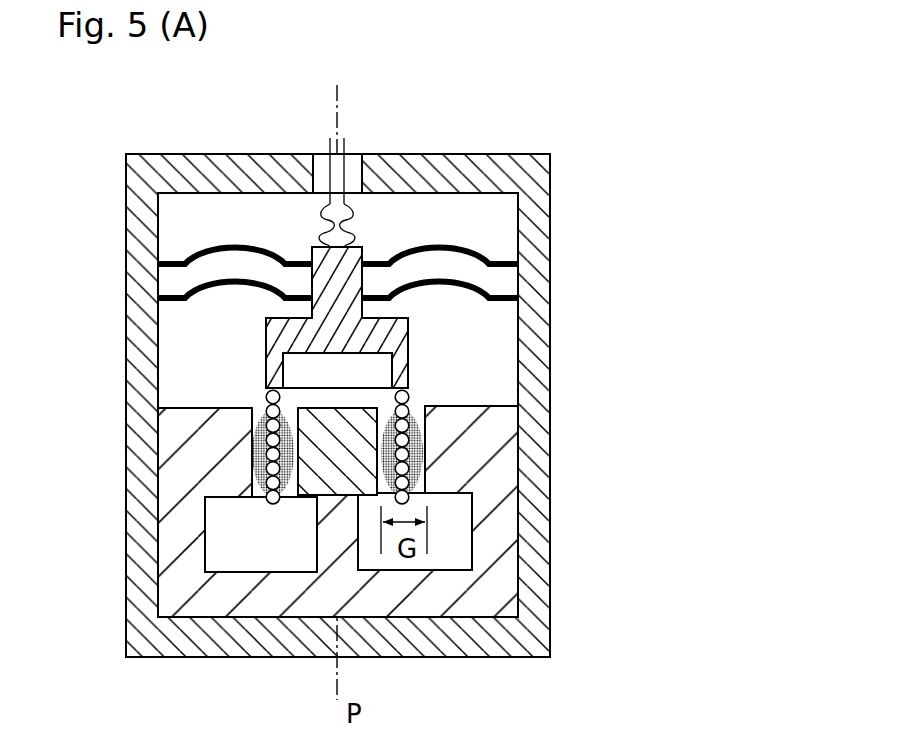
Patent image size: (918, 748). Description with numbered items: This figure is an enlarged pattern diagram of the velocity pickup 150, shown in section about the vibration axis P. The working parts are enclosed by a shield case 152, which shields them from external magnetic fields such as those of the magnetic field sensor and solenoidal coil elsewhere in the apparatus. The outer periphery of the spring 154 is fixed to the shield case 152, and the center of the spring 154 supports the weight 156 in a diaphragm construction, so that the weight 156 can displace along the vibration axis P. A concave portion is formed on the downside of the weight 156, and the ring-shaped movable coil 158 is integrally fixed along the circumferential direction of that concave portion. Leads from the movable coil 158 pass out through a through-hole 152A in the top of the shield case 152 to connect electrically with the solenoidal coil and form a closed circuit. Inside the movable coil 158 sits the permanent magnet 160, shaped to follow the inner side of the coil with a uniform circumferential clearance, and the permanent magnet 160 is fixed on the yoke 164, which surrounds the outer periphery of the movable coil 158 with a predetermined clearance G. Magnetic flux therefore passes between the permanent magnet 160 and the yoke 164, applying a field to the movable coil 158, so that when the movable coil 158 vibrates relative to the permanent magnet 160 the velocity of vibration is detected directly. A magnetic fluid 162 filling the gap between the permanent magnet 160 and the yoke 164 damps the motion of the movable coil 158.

The velocity pickup 150 is at (680, 303).
The shield case 152 is at (540, 182).
The through-hole 152A is at (363, 158).
The spring 154 is at (475, 250).
The weight 156 is at (407, 318).
The movable coil 158 is at (402, 410).
The permanent magnet 160 is at (423, 421).
The magnetic fluid 162 is at (423, 468).
The yoke 164 is at (493, 585).